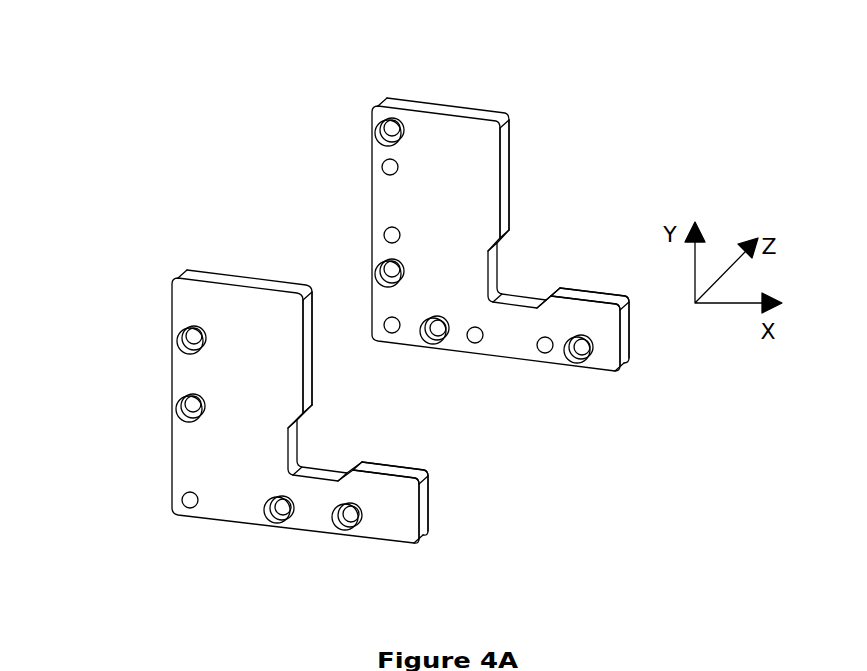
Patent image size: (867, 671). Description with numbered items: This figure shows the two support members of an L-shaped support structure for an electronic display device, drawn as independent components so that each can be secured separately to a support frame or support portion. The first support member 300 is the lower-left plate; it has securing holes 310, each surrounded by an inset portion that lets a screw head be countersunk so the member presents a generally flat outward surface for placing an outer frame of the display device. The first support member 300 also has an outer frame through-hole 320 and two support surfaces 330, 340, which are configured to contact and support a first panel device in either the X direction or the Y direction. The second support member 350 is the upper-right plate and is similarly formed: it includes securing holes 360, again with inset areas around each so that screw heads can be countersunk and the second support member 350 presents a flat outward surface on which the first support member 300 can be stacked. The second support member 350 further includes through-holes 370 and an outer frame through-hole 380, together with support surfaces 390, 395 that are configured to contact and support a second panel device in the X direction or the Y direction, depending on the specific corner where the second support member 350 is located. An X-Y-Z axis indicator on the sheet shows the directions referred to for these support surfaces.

The first support member 300 is at (160, 272).
The securing holes 310 is at (183, 338).
The outer frame through-hole 320 is at (192, 510).
The support surface 330 is at (380, 472).
The support surface 340 is at (304, 338).
The second support member 350 is at (360, 112).
The securing holes 360 is at (388, 128).
The through-holes 370 is at (382, 232).
The outer frame through-hole 380 is at (394, 338).
The support surface 390 is at (509, 174).
The support surface 395 is at (587, 296).